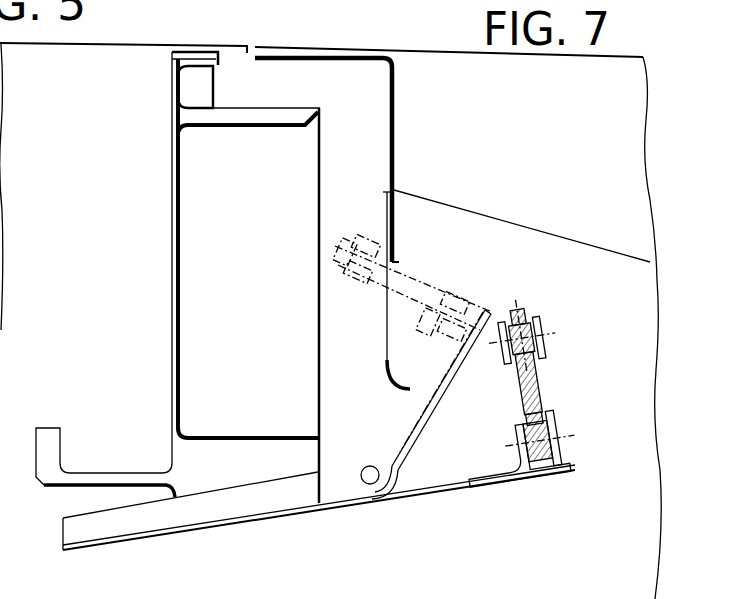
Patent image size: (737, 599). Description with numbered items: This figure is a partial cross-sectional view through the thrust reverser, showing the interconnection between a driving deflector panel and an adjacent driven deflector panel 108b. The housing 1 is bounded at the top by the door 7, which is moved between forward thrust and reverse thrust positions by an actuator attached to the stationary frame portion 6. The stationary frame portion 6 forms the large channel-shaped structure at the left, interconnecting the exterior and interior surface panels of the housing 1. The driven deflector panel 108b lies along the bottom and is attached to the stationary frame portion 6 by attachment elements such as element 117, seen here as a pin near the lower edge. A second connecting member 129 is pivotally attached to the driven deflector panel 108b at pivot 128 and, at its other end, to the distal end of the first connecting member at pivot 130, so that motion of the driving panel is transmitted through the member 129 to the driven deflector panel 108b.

The housing 1 is at (138, 36).
The stationary frame portion 6 is at (283, 118).
The door 7 is at (438, 57).
The driven deflector panel 108b is at (472, 483).
The attachment element 117 is at (370, 484).
The pivot 128 is at (565, 432).
The second connecting member 129 is at (538, 370).
The pivot 130 is at (541, 334).